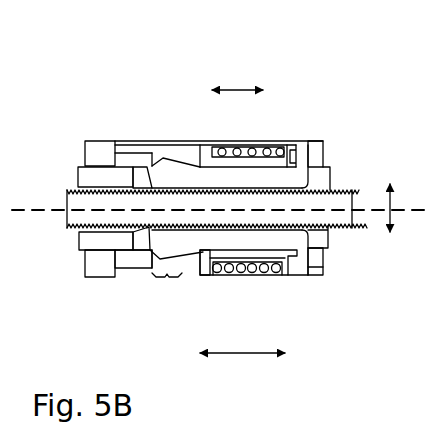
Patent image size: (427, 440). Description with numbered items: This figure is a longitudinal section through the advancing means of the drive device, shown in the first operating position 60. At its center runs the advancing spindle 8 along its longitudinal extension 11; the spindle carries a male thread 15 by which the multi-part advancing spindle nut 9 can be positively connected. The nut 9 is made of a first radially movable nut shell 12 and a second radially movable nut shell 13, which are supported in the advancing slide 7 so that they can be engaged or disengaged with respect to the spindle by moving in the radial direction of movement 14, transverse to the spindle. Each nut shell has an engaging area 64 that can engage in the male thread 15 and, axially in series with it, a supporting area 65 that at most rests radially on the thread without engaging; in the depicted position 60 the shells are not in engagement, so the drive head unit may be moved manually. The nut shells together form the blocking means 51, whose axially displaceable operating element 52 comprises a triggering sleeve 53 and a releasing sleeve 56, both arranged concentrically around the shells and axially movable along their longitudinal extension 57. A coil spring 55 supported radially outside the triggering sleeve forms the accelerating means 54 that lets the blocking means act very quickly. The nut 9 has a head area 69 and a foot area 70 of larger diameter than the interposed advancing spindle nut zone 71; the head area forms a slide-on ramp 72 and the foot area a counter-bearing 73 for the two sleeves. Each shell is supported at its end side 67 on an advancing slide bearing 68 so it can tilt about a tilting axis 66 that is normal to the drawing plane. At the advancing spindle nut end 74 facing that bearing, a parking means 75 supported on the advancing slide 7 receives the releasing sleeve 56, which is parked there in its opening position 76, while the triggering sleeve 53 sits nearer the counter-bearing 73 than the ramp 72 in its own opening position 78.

The advancing slide 7 is at (95, 152).
The advancing spindle 8 is at (343, 203).
The multi-part advancing spindle nut 9 is at (172, 303).
The longitudinal extension of the advancing spindle 11 is at (240, 359).
The first radially movable nut shell 12 is at (217, 243).
The second radially movable nut shell 13 is at (267, 173).
The radial direction of movement 14 is at (393, 226).
The male thread 15 is at (346, 233).
The blocking means 51 is at (148, 117).
The axially displaceable operating element 52 is at (348, 109).
The triggering sleeve 53 is at (250, 257).
The means for accelerating the triggering sleeve 54 is at (284, 291).
The coil spring 55 is at (274, 273).
The releasing sleeve 56 is at (137, 260).
The longitudinal extension of the nut shells 57 is at (232, 87).
The first operating position 60 is at (319, 71).
The engaging area 64 is at (166, 287).
The supporting area 65 is at (254, 139).
The tilting axis 66 is at (313, 187).
The end side 67 is at (366, 92).
The advancing slide bearing 68 is at (318, 242).
The head area 69 is at (163, 77).
The foot area 70 is at (303, 62).
The advancing spindle nut zone 71 is at (228, 47).
The slide-on ramp 72 is at (163, 175).
The counter-bearing 73 is at (305, 153).
The advancing spindle nut end 74 is at (140, 289).
The parking means 75 is at (88, 173).
The opening position of the release sleeve 76 is at (127, 136).
The opening position of the triggering sleeve 78 is at (268, 71).